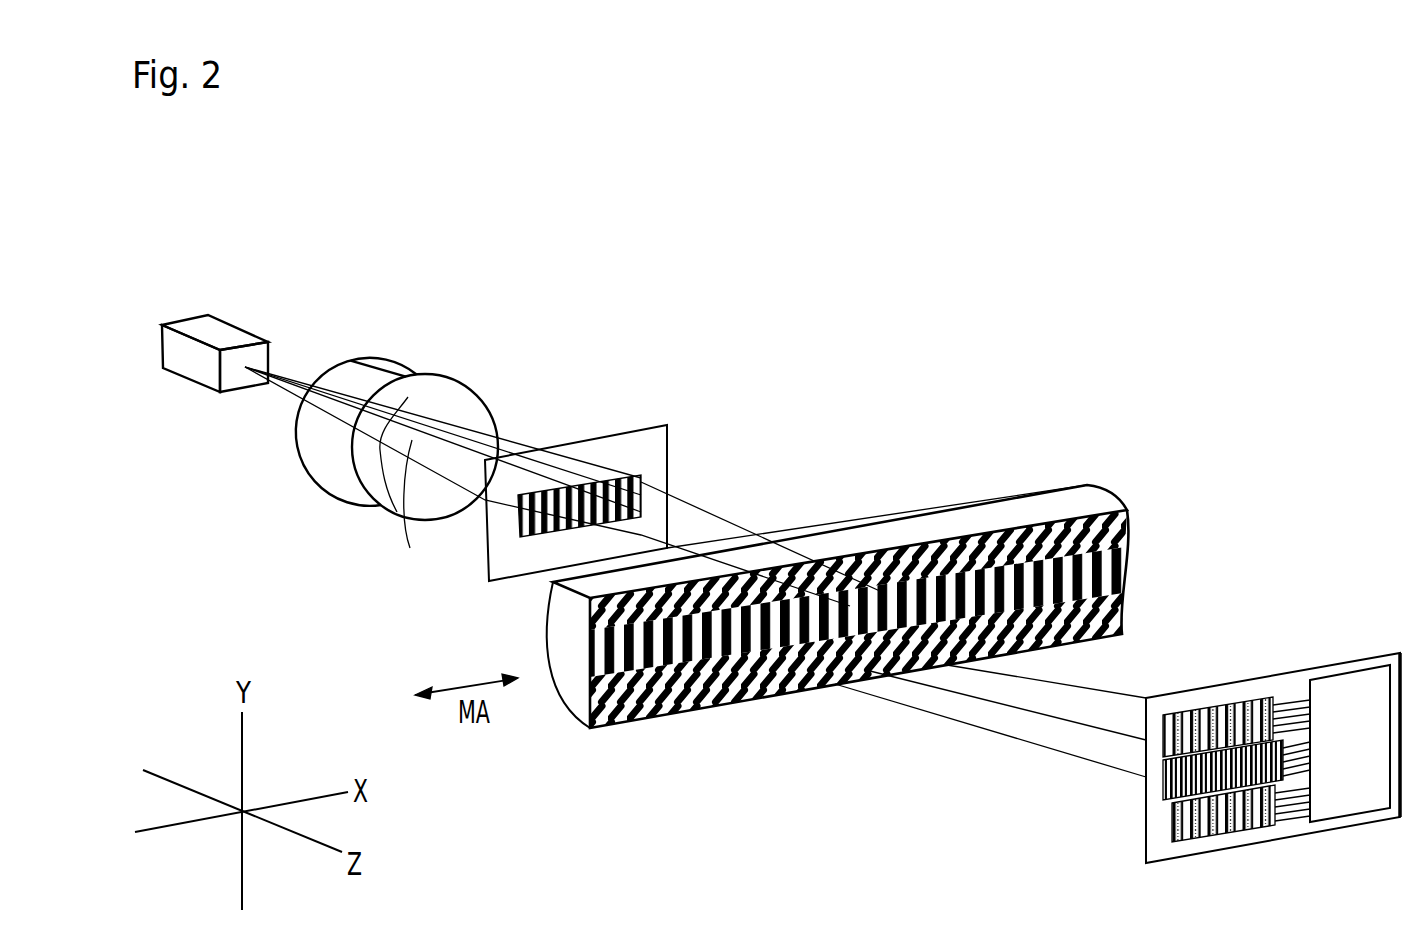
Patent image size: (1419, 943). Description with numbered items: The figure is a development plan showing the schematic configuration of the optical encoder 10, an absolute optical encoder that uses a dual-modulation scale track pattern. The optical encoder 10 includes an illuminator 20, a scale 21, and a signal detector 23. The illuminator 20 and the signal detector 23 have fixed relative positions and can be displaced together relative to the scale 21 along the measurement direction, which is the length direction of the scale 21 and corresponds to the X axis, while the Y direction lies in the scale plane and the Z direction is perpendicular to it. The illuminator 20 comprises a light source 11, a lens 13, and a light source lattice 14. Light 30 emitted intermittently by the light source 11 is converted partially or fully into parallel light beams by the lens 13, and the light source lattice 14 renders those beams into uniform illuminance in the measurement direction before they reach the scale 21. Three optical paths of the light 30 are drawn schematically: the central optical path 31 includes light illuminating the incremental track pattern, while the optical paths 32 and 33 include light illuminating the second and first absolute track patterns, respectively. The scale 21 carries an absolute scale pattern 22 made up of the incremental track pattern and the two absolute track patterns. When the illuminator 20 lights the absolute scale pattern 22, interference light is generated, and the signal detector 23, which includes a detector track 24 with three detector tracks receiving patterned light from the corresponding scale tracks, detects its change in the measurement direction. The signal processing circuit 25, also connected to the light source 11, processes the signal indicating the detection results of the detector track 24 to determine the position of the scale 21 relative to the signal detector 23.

The optical encoder 10 is at (822, 184).
The light source 11 is at (242, 330).
The lens 13 is at (455, 474).
The light source lattice 14 is at (617, 434).
The illuminator 20 is at (630, 233).
The scale 21 is at (952, 570).
The absolute scale pattern 22 is at (1297, 430).
The signal detector 23 is at (1157, 747).
The detector track 24 is at (1112, 801).
The signal processing circuit 25 is at (1345, 672).
The light 30 is at (268, 408).
The optical path 31 is at (440, 490).
The optical path 32 is at (352, 504).
The optical path 33 is at (410, 548).